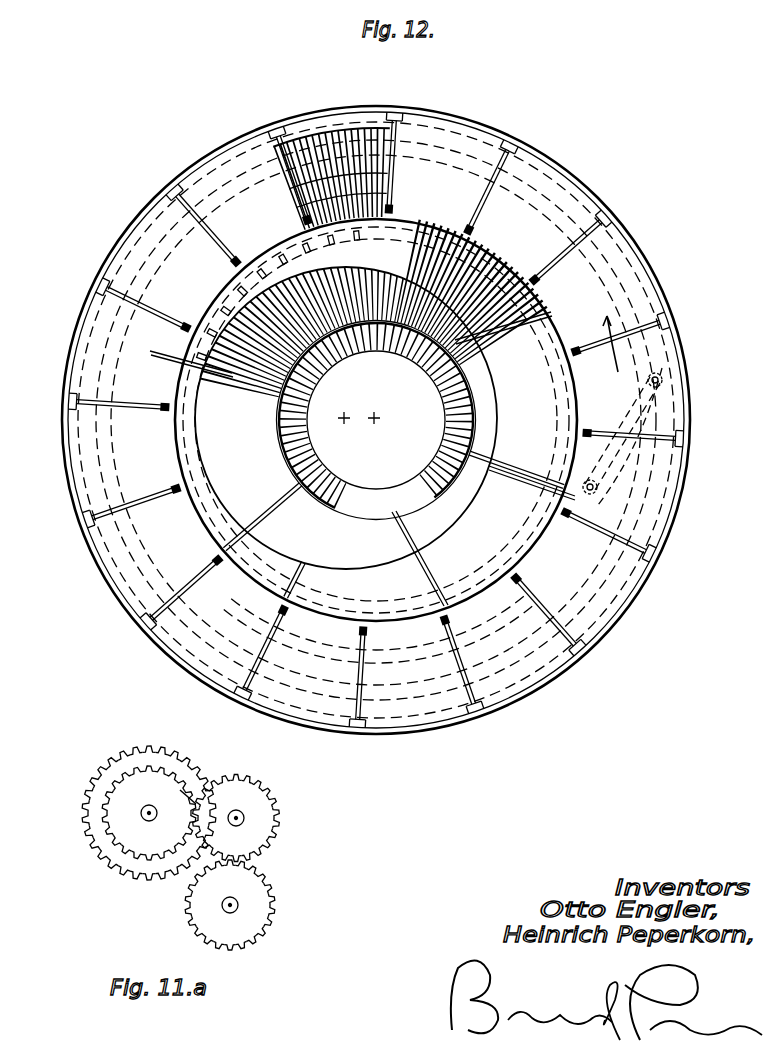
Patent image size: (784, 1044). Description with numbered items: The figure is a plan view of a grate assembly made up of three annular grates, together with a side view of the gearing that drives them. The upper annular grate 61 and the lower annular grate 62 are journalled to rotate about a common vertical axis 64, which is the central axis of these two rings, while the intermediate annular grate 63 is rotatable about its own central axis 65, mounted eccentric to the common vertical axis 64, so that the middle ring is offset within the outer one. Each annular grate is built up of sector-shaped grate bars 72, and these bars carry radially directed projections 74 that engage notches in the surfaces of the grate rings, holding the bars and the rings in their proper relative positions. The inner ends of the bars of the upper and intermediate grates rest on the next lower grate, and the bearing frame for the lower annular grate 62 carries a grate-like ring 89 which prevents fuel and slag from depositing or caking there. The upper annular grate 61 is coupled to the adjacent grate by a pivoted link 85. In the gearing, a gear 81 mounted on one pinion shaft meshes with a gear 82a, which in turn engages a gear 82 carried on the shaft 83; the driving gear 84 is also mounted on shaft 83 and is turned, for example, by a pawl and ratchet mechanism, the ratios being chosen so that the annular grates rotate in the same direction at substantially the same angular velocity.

In FIG. 12, the upper annular grate 61 is at (648, 268).
In FIG. 12, the lower annular grate 62 is at (370, 318).
In FIG. 12, the intermediate annular grate 63 is at (272, 558).
In FIG. 12, the common vertical axis 64 is at (377, 414).
In FIG. 12, the central axis of intermediate grate 65 is at (345, 421).
In FIG. 12, the sector-shaped grate bars 72 is at (310, 137).
In FIG. 12, the radially directed projections 74 is at (462, 237).
In FIG. 12, the pivoted link 85 is at (634, 457).
In FIG. 12, the grate-like ring 89 is at (278, 432).
In FIG. 11A, the gear 81 is at (257, 900).
In FIG. 11A, the gear 82 is at (173, 797).
In FIG. 11A, the gear 82a is at (265, 822).
In FIG. 11A, the shaft 83 is at (141, 812).
In FIG. 11A, the driving gear 84 is at (107, 840).